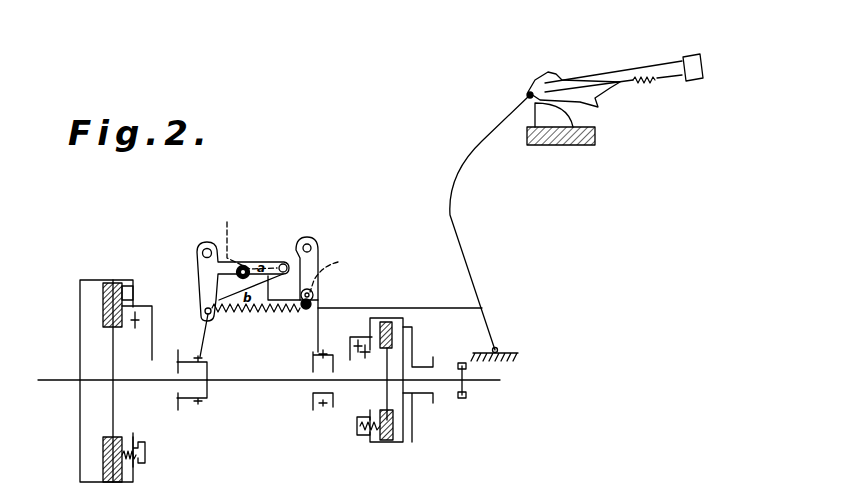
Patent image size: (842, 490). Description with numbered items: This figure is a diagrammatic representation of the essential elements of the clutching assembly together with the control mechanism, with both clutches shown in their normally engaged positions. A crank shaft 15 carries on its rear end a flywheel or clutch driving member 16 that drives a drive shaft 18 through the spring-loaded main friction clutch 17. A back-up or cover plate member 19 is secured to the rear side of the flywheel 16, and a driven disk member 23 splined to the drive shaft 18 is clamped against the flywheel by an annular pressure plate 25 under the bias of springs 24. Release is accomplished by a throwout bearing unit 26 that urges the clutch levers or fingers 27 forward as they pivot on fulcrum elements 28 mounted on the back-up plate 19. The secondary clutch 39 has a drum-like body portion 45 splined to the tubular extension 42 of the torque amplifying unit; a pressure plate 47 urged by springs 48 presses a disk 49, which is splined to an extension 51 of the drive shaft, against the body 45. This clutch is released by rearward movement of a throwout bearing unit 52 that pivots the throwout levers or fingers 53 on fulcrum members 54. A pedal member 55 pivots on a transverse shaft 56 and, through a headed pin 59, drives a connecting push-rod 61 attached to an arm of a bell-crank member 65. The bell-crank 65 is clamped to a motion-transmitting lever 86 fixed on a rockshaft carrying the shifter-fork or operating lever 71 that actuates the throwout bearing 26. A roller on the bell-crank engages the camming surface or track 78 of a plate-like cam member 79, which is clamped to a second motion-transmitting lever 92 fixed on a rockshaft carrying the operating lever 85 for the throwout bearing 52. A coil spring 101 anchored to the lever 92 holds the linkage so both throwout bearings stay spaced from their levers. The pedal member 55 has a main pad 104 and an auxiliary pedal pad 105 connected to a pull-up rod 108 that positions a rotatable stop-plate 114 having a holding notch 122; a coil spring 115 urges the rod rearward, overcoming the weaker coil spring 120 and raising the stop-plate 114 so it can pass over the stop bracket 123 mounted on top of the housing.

The crank shaft 15 is at (52, 380).
The flywheel or clutch driving member 16 is at (80, 300).
The main friction clutch 17 is at (92, 272).
The drive shaft 18 is at (258, 385).
The back-up or cover plate member 19 is at (136, 297).
The driven disk member 23 is at (113, 363).
The spring 24 is at (145, 456).
The annular pressure plate 25 is at (123, 287).
The throwout bearing unit 26 is at (207, 400).
The clutch lever or finger 27 is at (150, 368).
The fulcrum element 28 is at (130, 333).
The secondary clutch 39 is at (406, 300).
The tubular extension 42 is at (420, 366).
The drum-like body portion 45 is at (403, 330).
The pressure plate 47 is at (380, 322).
The spring 48 is at (357, 427).
The disk 49 is at (392, 355).
The drive shaft extension 51 is at (456, 385).
The clutch throwout bearing unit 52 is at (313, 402).
The clutch throwout lever or finger 53 is at (346, 344).
The fulcrum member 54 is at (360, 367).
The pedal member 55 is at (487, 147).
The transverse shaft 56 is at (498, 348).
The headed pin 59 is at (485, 306).
The connecting push-rod 61 is at (430, 308).
The bell-crank member 65 is at (235, 257).
The shifter-fork or operating lever 71 is at (197, 335).
The camming surface or track 78 is at (303, 240).
The plate-like cam member 79 is at (315, 244).
The shifter-fork or operating lever 85 is at (320, 332).
The pick-up or motion-transmitting lever 86 is at (246, 237).
The pick-up or motion-transmitting lever 92 is at (330, 270).
The coil spring 101 is at (268, 313).
The main pad or pedal portion 104 is at (686, 57).
The auxiliary pedal pad 105 is at (701, 70).
The pull-up rod 108 is at (660, 79).
The stop-plate 114 is at (556, 80).
The coil spring 115 is at (650, 88).
The coil spring 120 is at (526, 90).
The interlocking or holding notch 122 is at (597, 106).
The stop bracket 123 is at (552, 115).